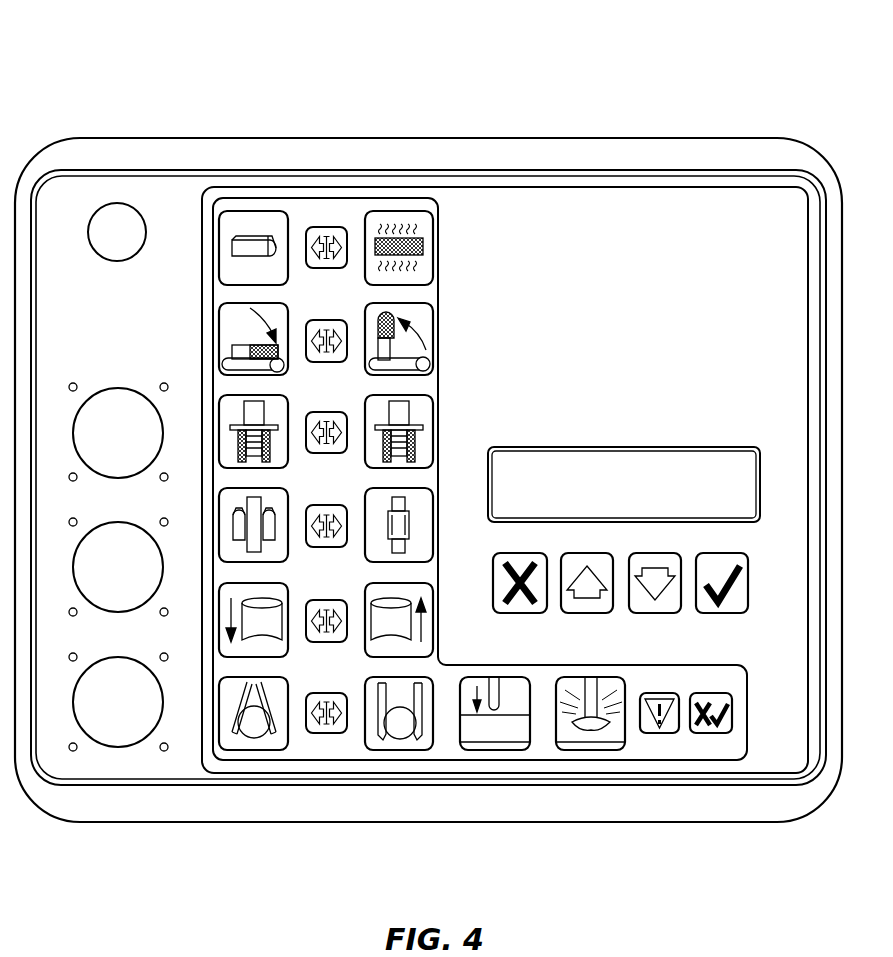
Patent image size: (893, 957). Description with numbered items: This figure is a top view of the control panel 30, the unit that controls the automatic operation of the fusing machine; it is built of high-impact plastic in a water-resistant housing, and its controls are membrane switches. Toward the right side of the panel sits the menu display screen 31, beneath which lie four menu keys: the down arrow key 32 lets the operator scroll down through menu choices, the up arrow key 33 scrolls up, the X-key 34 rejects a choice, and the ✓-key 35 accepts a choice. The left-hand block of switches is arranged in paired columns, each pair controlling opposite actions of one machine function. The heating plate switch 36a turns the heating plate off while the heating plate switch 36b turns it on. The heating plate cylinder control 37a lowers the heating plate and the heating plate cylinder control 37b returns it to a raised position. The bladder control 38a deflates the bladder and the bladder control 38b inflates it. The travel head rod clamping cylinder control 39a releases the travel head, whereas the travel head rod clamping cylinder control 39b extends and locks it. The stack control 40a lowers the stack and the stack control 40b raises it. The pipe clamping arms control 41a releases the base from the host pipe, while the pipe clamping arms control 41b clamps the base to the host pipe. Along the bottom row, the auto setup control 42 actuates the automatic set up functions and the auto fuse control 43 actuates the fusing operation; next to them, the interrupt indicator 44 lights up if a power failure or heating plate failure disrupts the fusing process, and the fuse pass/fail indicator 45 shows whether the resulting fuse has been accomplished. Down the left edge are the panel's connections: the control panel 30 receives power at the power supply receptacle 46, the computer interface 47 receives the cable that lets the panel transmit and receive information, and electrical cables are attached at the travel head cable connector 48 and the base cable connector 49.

The control panel 30 is at (80, 89).
The menu display screen 31 is at (640, 498).
The down arrow key 32 is at (582, 613).
The up arrow key 33 is at (647, 613).
The X-key 34 is at (518, 613).
The ✓-key 35 is at (713, 613).
The heating plate switch 36a is at (220, 275).
The heating plate switch 36b is at (434, 247).
The heating plate cylinder control 37a is at (220, 343).
The heating plate cylinder control 37b is at (434, 332).
The bladder control 38a is at (220, 402).
The bladder control 38b is at (434, 395).
The travel head rod clamping cylinder control 39a is at (283, 490).
The travel head rod clamping cylinder control 39b is at (434, 482).
The stack control 40a is at (283, 585).
The stack control 40b is at (437, 627).
The pipe clamping arms control 41a is at (267, 750).
The pipe clamping arms control 41b is at (407, 750).
The auto setup control 42 is at (502, 750).
The auto fuse control 43 is at (597, 750).
The interrupt indicator 44 is at (667, 733).
The fuse pass/fail indicator 45 is at (715, 733).
The power supply receptacle 46 is at (130, 245).
The computer interface 47 is at (133, 447).
The travel head cable connector 48 is at (133, 581).
The base cable connector 49 is at (133, 716).